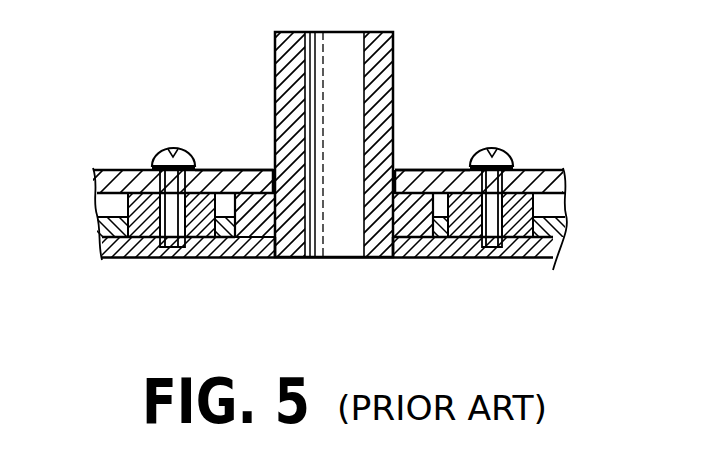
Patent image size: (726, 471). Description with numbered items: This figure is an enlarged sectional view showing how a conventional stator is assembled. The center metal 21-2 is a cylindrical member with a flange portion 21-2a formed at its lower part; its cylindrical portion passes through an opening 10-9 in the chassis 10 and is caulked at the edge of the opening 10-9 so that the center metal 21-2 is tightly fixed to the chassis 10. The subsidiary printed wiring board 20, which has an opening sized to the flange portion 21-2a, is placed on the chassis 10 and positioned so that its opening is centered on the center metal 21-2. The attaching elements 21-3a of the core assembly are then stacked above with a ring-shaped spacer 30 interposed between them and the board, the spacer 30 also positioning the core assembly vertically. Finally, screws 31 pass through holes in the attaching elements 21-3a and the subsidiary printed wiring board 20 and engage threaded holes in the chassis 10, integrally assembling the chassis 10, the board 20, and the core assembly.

The center metal 21-2 is at (393, 50).
The flange portion 21-2a is at (272, 240).
The attaching elements 21-3a is at (227, 169).
The ring-shaped spacer 30 is at (562, 179).
The subsidiary printed wiring board 20 is at (560, 231).
The chassis 10 is at (533, 258).
The opening 10-9 is at (393, 250).
The screws 31 is at (172, 147).